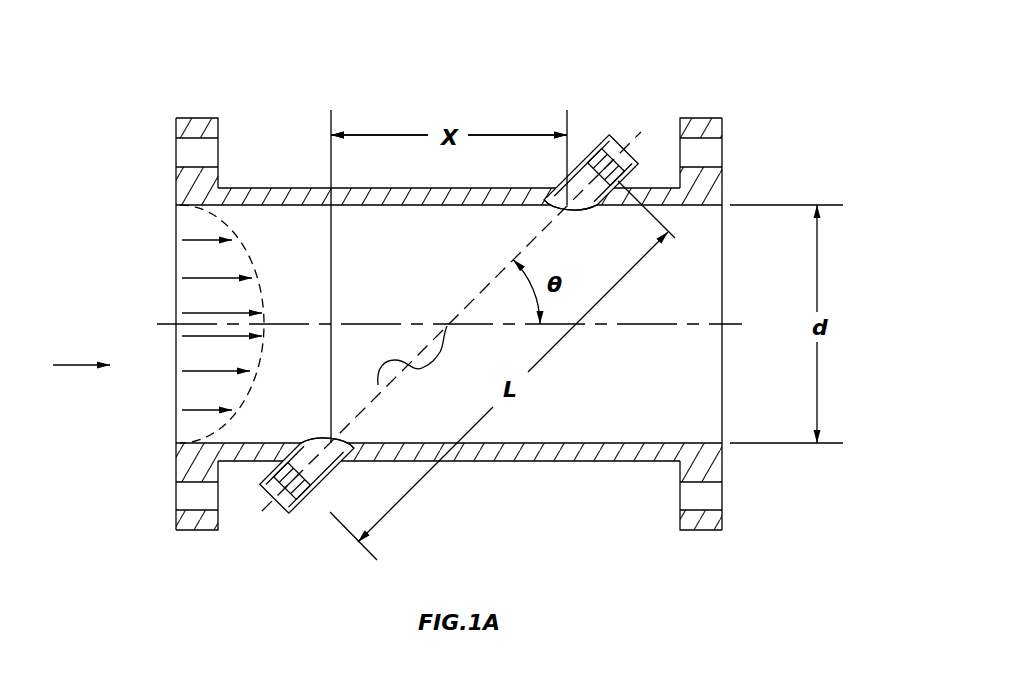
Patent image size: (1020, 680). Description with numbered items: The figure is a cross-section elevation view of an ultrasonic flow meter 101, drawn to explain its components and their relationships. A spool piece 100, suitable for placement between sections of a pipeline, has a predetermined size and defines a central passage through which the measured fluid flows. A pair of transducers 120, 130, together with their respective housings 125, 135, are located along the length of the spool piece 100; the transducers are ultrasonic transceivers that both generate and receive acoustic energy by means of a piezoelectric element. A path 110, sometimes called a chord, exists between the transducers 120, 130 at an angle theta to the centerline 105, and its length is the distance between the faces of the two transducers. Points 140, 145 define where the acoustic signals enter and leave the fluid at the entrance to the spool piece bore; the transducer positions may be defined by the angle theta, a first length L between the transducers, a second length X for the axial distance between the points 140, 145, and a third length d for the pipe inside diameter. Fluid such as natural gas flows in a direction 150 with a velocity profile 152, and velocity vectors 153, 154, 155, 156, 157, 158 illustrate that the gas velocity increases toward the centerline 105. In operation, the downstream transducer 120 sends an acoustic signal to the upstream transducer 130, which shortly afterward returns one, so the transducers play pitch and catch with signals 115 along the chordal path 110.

The spool piece 100 is at (193, 117).
The ultrasonic flow meter 101 is at (770, 60).
The centerline 105 is at (728, 325).
The path 110 is at (488, 285).
The signals 115 is at (422, 368).
The downstream transducer 120 is at (618, 136).
The housing 125 is at (596, 142).
The upstream transducer 130 is at (278, 508).
The housing 135 is at (331, 474).
The point 140 is at (567, 208).
The point 145 is at (328, 440).
The direction 150 is at (82, 367).
The velocity profile 152 is at (237, 242).
The velocity vector 153 is at (193, 240).
The velocity vector 154 is at (195, 278).
The velocity vector 155 is at (195, 313).
The velocity vector 156 is at (195, 337).
The velocity vector 157 is at (195, 372).
The velocity vector 158 is at (195, 411).